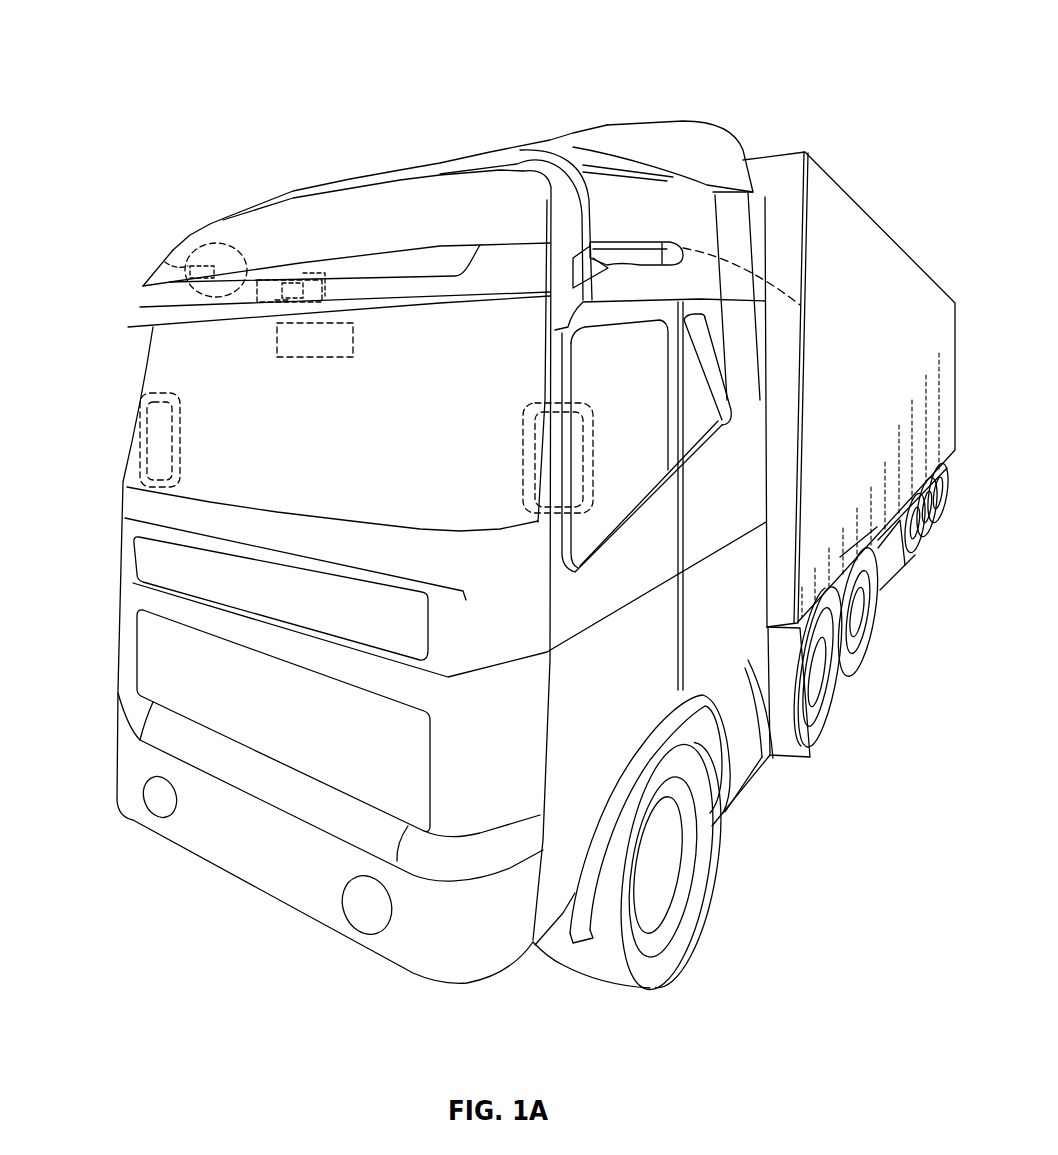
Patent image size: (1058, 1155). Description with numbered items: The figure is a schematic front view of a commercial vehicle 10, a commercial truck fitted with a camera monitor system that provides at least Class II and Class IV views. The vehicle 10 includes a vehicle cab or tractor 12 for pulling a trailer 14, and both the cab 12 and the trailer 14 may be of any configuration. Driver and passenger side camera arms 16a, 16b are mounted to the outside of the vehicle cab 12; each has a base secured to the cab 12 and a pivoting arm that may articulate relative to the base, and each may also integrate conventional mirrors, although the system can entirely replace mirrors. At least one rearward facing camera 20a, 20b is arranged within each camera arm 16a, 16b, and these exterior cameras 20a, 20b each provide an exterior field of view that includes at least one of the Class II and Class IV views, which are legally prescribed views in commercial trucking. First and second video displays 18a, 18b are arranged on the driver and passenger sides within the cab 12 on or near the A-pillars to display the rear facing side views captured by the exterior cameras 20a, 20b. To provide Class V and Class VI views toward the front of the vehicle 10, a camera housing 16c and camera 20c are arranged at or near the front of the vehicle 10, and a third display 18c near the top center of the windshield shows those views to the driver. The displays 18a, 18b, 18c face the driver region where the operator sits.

The commercial vehicle 10 is at (800, 56).
The vehicle cab 12 is at (123, 542).
The trailer 14 is at (868, 233).
The driver side camera arm 16a is at (632, 248).
The passenger side camera arm 16b is at (217, 246).
The camera housing 16c is at (277, 277).
The first video display 18a is at (527, 445).
The second video display 18b is at (180, 442).
The third display 18c is at (353, 340).
The rearward facing camera 20a is at (800, 305).
The rearward facing camera 20b is at (168, 259).
The camera 20c is at (280, 308).